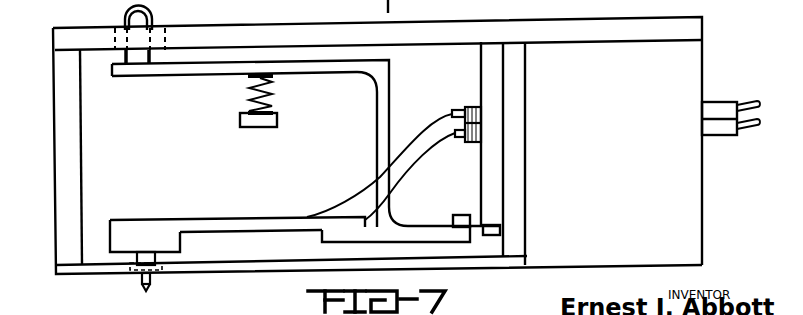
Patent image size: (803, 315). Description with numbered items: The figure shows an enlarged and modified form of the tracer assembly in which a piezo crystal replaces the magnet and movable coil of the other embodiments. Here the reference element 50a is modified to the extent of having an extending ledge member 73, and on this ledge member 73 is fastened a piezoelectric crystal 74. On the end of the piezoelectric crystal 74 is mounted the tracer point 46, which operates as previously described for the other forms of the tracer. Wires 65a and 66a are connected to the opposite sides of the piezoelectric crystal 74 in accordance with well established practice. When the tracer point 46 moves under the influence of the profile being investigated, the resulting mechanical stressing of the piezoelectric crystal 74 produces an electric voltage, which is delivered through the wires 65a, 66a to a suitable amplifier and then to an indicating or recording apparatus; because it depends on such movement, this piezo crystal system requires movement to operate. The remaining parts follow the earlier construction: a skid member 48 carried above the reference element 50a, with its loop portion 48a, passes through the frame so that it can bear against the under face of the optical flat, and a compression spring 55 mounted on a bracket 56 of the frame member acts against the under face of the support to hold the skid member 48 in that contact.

The tracer point 46 is at (140, 283).
The skid member 48 is at (175, 3).
The hook loop 48a is at (126, 15).
The reference element 50a is at (390, 73).
The compression spring 55 is at (273, 92).
The bracket 56 is at (278, 118).
The wire 65a is at (412, 143).
The wire 66a is at (416, 157).
The ledge member 73 is at (342, 232).
The piezoelectric crystal 74 is at (212, 218).